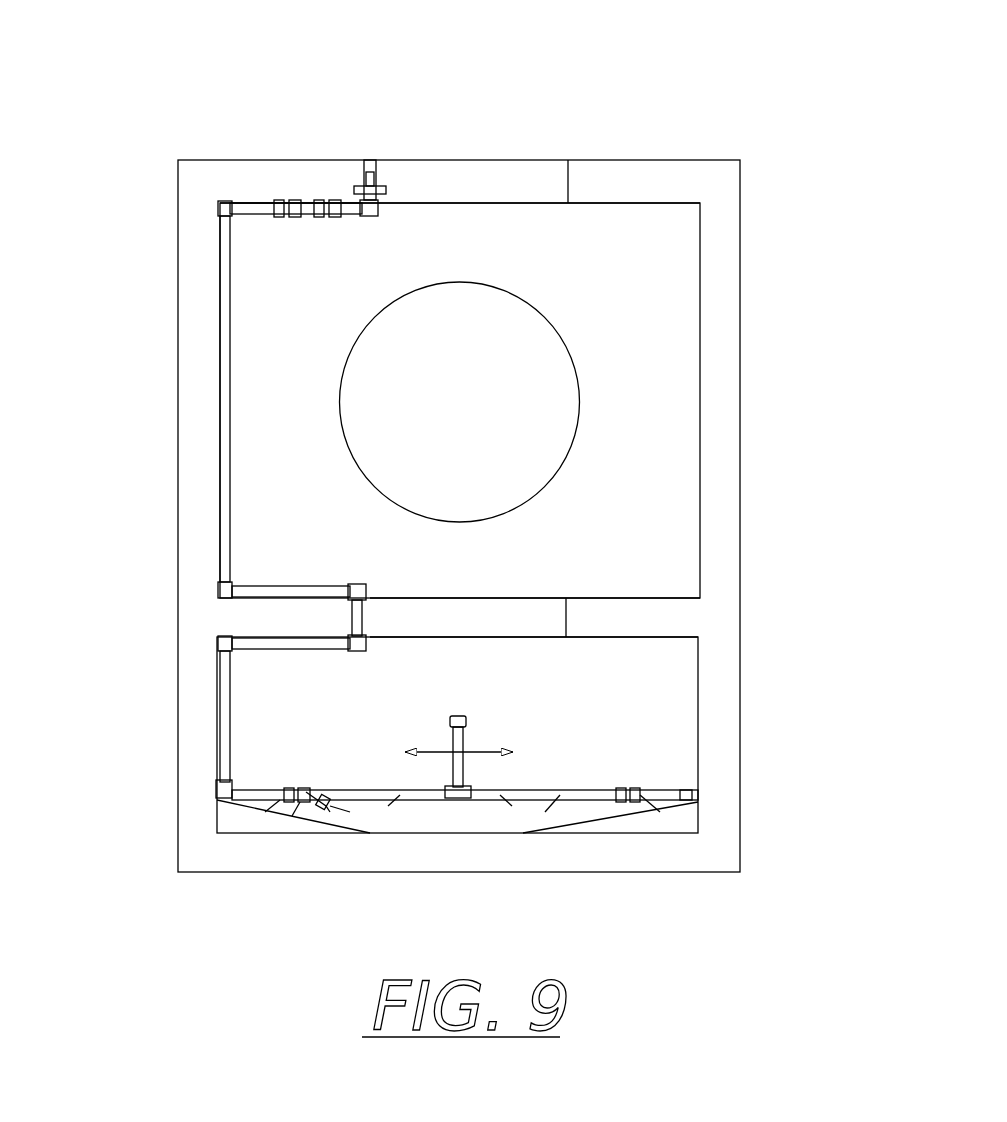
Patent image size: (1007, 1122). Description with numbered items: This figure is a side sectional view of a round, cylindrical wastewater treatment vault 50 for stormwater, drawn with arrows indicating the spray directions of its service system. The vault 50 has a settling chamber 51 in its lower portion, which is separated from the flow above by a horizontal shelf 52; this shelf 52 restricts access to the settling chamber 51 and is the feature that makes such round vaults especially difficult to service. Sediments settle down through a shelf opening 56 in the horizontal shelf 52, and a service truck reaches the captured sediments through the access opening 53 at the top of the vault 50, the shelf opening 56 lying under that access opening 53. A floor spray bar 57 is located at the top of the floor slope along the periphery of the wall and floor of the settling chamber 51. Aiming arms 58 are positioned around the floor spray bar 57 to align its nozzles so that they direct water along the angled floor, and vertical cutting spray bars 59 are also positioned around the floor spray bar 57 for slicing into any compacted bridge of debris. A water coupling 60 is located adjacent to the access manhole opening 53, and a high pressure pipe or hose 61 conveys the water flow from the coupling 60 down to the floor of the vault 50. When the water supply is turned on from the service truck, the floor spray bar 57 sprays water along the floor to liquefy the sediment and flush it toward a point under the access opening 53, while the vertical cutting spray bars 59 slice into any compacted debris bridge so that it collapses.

The wastewater treatment vault 50 is at (718, 128).
The settling chamber 51 is at (682, 731).
The horizontal shelf 52 is at (632, 607).
The access opening 53 is at (472, 178).
The shelf opening 56 is at (503, 617).
The floor spray bar 57 is at (490, 800).
The aiming arms 58 is at (302, 808).
The vertical cutting spray bars 59 is at (450, 737).
The water coupling 60 is at (376, 178).
The high pressure pipe or hose 61 is at (218, 253).